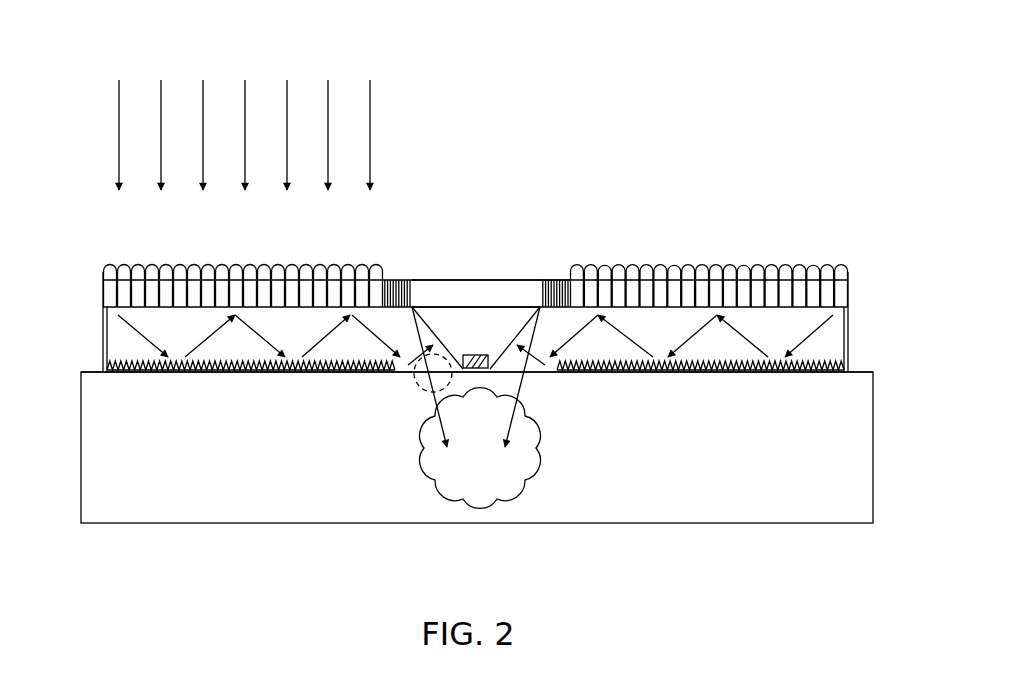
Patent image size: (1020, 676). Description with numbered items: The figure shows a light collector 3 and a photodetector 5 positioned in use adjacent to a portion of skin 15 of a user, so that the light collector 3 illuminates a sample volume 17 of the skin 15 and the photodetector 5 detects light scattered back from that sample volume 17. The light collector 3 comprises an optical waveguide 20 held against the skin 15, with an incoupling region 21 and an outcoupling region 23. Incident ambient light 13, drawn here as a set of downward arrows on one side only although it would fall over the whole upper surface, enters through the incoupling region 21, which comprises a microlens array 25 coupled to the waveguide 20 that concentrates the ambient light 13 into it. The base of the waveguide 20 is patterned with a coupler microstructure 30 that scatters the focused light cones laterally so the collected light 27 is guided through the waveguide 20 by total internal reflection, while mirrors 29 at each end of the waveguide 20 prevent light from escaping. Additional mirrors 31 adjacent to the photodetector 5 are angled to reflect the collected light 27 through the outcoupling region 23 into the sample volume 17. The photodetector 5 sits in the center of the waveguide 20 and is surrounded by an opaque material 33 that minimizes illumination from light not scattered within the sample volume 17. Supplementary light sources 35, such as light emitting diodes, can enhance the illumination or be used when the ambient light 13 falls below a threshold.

The ambient light 13 is at (242, 43).
The incoupling region 21 is at (98, 266).
The microlens array 25 is at (375, 262).
The supplementary light sources 35 is at (563, 258).
The opaque material 33 is at (453, 313).
The additional mirrors 31 is at (424, 313).
The photodetector 5 is at (473, 355).
The mirrors 29 is at (105, 338).
The light collector 3 is at (122, 338).
The optical waveguide 20 is at (835, 332).
The coupler microstructure 30 is at (245, 372).
The skin 15 is at (137, 482).
The collected light 27 is at (807, 372).
The outcoupling region 23 is at (423, 380).
The sample volume 17 is at (488, 482).